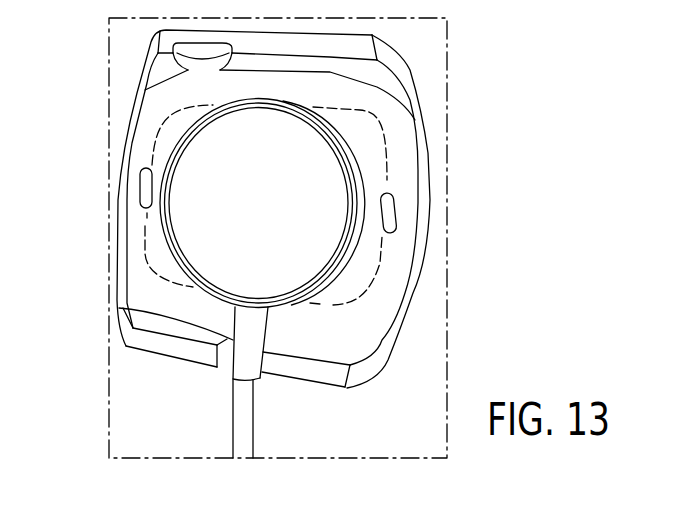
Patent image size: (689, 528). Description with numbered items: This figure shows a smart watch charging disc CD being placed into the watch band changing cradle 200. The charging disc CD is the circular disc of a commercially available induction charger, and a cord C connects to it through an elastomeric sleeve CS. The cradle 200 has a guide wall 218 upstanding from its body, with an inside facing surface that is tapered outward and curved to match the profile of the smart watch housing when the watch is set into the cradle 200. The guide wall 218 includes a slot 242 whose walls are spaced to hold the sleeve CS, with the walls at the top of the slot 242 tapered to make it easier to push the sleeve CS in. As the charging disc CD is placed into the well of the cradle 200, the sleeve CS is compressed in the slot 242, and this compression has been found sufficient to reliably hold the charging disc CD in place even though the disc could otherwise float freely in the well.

The watch band changing cradle 200 is at (407, 131).
The charging disc CD is at (313, 203).
The slot 242 is at (147, 312).
The second guide wall 218 is at (150, 343).
The elastomeric sleeve CS is at (242, 368).
The cord C is at (247, 438).